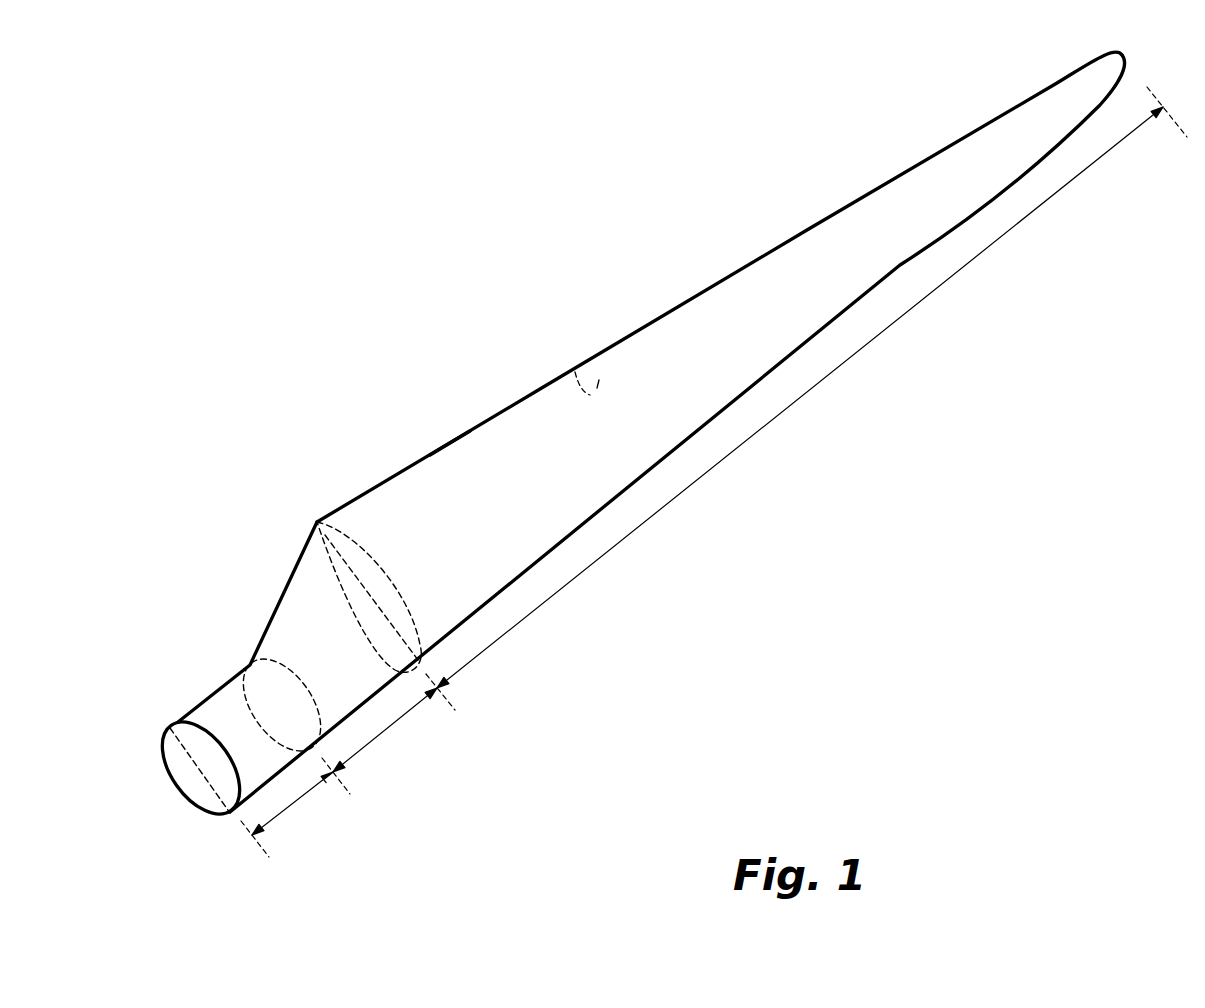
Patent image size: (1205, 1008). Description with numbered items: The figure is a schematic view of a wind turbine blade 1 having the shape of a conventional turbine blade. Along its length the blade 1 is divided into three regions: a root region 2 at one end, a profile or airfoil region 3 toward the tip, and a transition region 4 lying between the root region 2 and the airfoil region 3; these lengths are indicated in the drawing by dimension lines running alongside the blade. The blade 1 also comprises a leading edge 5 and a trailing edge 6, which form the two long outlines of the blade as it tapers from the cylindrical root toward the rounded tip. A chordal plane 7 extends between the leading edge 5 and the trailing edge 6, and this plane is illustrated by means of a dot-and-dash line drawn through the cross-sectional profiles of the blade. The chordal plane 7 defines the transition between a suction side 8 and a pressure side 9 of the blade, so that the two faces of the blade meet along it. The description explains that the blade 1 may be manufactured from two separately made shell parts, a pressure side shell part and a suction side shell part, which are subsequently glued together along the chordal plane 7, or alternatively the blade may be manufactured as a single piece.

The wind turbine blade 1 is at (630, 440).
The root region 2 is at (293, 800).
The airfoil region 3 is at (727, 457).
The transition region 4 is at (387, 730).
The leading edge 5 is at (833, 320).
The trailing edge 6 is at (840, 210).
The chordal plane 7 is at (367, 590).
The suction side 8 is at (470, 455).
The pressure side 9 is at (575, 372).